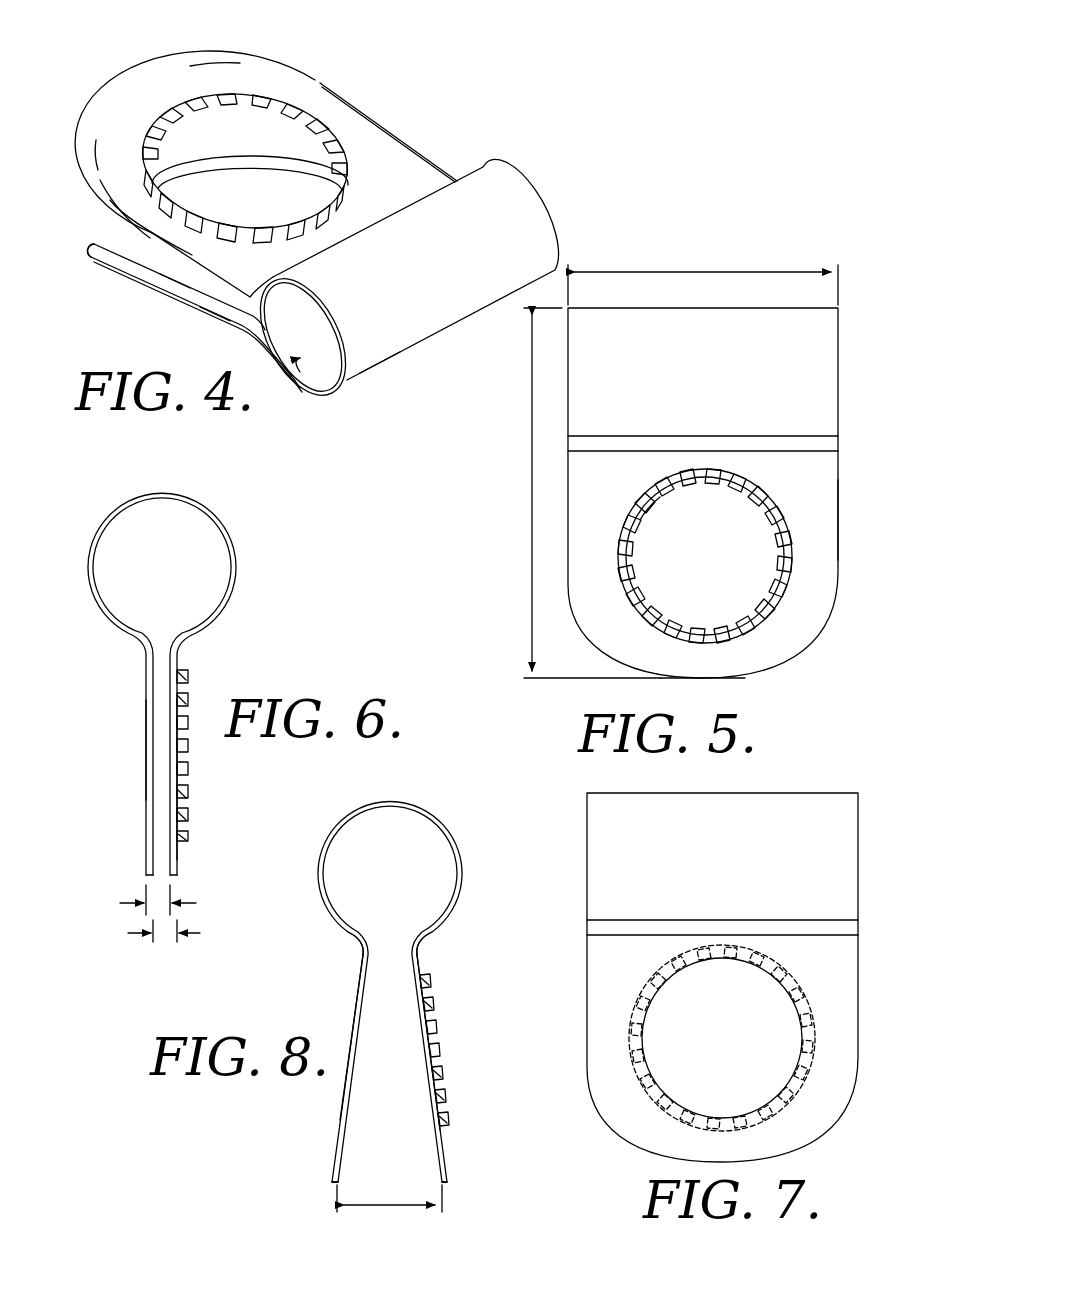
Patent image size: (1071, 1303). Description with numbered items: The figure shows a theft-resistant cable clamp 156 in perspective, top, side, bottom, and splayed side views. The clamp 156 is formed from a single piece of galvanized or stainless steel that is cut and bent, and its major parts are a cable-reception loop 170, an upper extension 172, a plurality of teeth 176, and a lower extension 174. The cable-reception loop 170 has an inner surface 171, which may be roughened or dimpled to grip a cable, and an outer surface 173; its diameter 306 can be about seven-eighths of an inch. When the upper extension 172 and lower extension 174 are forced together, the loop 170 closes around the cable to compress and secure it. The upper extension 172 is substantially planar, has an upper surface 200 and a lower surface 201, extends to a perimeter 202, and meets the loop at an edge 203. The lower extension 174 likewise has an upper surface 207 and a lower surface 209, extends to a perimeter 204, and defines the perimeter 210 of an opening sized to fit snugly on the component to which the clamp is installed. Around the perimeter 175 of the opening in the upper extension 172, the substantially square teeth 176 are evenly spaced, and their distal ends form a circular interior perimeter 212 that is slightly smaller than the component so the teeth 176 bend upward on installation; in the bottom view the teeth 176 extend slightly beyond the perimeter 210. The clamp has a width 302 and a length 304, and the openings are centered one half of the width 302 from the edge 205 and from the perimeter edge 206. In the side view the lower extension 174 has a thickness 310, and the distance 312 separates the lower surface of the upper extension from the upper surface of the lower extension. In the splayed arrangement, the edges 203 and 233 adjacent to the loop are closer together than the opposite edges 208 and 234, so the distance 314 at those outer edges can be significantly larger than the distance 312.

In FIG. 4, the theft-resistant cable clamp 156 is at (325, 234).
In FIG. 5, the theft-resistant cable clamp 156 is at (669, 457).
In FIG. 6, the theft-resistant cable clamp 156 is at (185, 712).
In FIG. 7, the theft-resistant cable clamp 156 is at (727, 959).
In FIG. 8, the theft-resistant cable clamp 156 is at (395, 1008).
In FIG. 4, the cable-reception loop 170 is at (452, 310).
In FIG. 6, the cable-reception loop 170 is at (88, 572).
In FIG. 8, the cable-reception loop 170 is at (390, 992).
In FIG. 4, the inner surface 171 is at (312, 378).
In FIG. 4, the upper extension 172 is at (100, 168).
In FIG. 5, the upper extension 172 is at (808, 622).
In FIG. 6, the upper extension 172 is at (180, 845).
In FIG. 7, the upper extension 172 is at (820, 1118).
In FIG. 8, the upper extension 172 is at (425, 1066).
In FIG. 4, the outer surface 173 is at (388, 345).
In FIG. 4, the lower extension 174 is at (122, 282).
In FIG. 6, the lower extension 174 is at (146, 760).
In FIG. 8, the lower extension 174 is at (352, 1000).
In FIG. 4, the perimeter of the opening in the upper extension 175 is at (330, 138).
In FIG. 5, the perimeter of the opening in the upper extension 175 is at (787, 520).
In FIG. 4, the teeth 176 is at (228, 200).
In FIG. 5, the teeth 176 is at (746, 500).
In FIG. 6, the teeth 176 is at (189, 780).
In FIG. 7, the teeth 176 is at (780, 992).
In FIG. 8, the teeth 176 is at (434, 1050).
In FIG. 4, the upper surface 200 is at (388, 134).
In FIG. 4, the lower surface 201 is at (100, 196).
In FIG. 4, the perimeter 202 is at (212, 70).
In FIG. 4, the edge 203 is at (425, 188).
In FIG. 8, the edge 203 is at (420, 946).
In FIG. 4, the perimeter 204 is at (110, 253).
In FIG. 5, the edge 205 is at (840, 520).
In FIG. 5, the perimeter edge 206 is at (725, 682).
In FIG. 4, the upper surface 207 is at (185, 290).
In FIG. 8, the edge 208 is at (448, 1175).
In FIG. 4, the lower surface 209 is at (216, 316).
In FIG. 4, the perimeter of the opening in the lower extension 210 is at (278, 190).
In FIG. 5, the perimeter of the opening in the lower extension 210 is at (650, 500).
In FIG. 7, the perimeter of the opening in the lower extension 210 is at (793, 1060).
In FIG. 5, the interior perimeter 212 is at (765, 592).
In FIG. 8, the edge 233 is at (360, 946).
In FIG. 8, the edge 234 is at (333, 1175).
In FIG. 5, the width 302 is at (705, 272).
In FIG. 5, the length 304 is at (530, 490).
In FIG. 6, the diameter 306 is at (234, 535).
In FIG. 6, the thickness 310 is at (130, 905).
In FIG. 6, the distance 312 is at (190, 935).
In FIG. 8, the distance 314 is at (380, 1210).